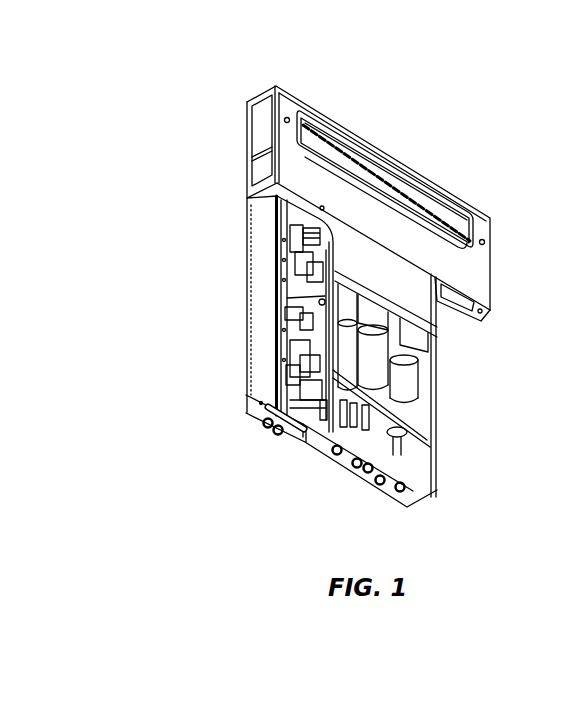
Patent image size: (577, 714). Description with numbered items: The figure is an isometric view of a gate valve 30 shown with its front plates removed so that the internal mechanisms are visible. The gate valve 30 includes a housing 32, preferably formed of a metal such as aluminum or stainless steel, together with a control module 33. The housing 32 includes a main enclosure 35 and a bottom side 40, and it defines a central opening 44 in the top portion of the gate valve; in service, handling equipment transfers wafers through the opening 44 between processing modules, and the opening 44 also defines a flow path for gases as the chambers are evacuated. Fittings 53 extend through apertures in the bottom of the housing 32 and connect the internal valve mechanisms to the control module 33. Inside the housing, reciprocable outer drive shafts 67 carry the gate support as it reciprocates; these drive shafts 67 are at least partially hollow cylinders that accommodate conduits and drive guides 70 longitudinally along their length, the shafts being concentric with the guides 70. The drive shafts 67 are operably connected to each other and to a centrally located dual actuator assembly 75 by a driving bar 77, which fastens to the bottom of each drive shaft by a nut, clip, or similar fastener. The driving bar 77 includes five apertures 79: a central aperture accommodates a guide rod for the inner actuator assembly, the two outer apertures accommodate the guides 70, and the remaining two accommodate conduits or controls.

The gate valve 30 is at (446, 135).
The housing 32 is at (242, 176).
The control module 33 is at (255, 378).
The main enclosure 35 is at (481, 283).
The bottom side 40 is at (420, 490).
The central opening 44 is at (441, 219).
The fittings 53 is at (368, 490).
The outer drive shafts 67 is at (404, 392).
The drive guides 70 is at (398, 453).
The dual actuator assembly 75 is at (372, 357).
The driving bar 77 is at (395, 430).
The apertures 79 is at (368, 432).